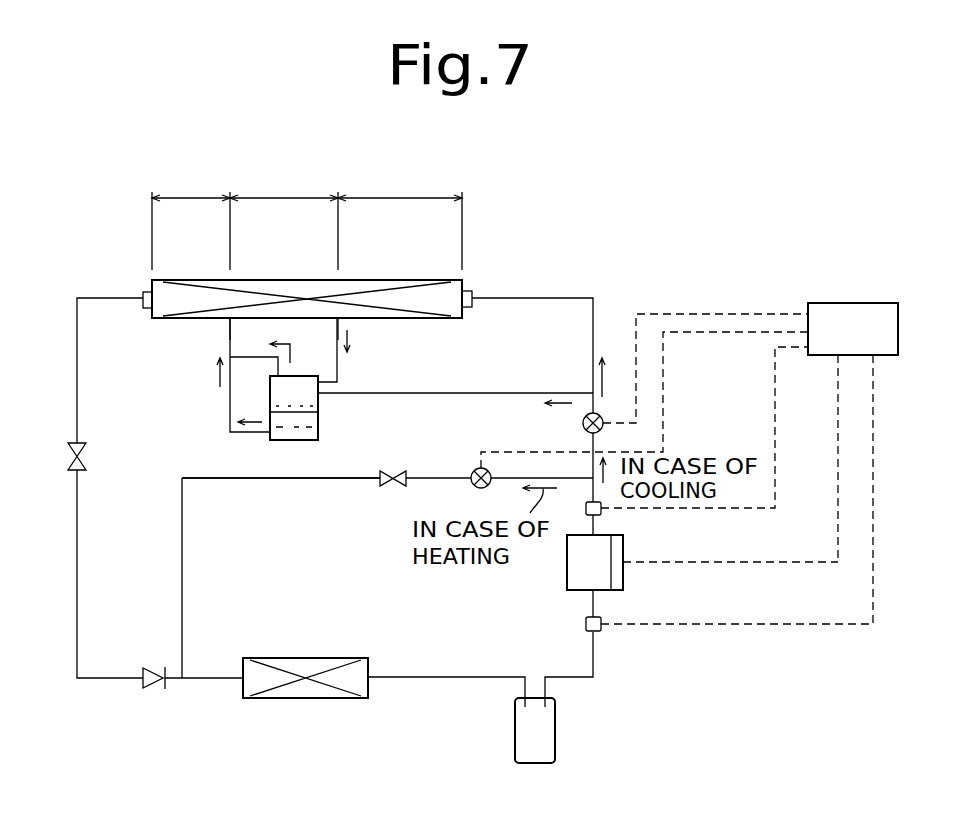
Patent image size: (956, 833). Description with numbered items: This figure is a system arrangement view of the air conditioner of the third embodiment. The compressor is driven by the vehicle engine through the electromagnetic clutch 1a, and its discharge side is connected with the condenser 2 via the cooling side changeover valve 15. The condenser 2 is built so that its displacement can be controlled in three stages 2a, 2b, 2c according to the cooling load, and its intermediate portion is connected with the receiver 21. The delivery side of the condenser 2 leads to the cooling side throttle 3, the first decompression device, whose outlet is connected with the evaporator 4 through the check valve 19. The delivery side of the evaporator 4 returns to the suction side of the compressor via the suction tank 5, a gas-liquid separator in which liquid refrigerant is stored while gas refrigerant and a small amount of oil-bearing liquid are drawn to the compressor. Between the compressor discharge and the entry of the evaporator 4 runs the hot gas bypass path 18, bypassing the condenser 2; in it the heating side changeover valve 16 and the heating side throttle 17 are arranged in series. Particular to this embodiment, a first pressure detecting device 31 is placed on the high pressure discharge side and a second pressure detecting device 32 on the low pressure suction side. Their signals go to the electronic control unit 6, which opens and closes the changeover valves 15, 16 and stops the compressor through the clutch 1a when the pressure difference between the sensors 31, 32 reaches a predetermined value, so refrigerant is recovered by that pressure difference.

The condenser 2 is at (388, 280).
The first stage of the condenser 2a is at (191, 219).
The second stage of the condenser 2b is at (284, 254).
The third stage of the condenser 2c is at (400, 219).
The receiver 21 is at (322, 403).
The cooling side throttle 3 is at (68, 448).
The check valve 19 is at (153, 668).
The hot gas bypass path 18 is at (283, 483).
The heating side throttle 17 is at (398, 470).
The heating side changeover valve 16 is at (477, 468).
The cooling side changeover valve 15 is at (582, 428).
The electronic control unit 6 is at (842, 303).
The first pressure detecting device 31 is at (602, 510).
The electromagnetic clutch 1a is at (623, 577).
The second pressure detecting device 32 is at (602, 632).
The evaporator 4 is at (303, 700).
The suction tank 5 is at (556, 728).